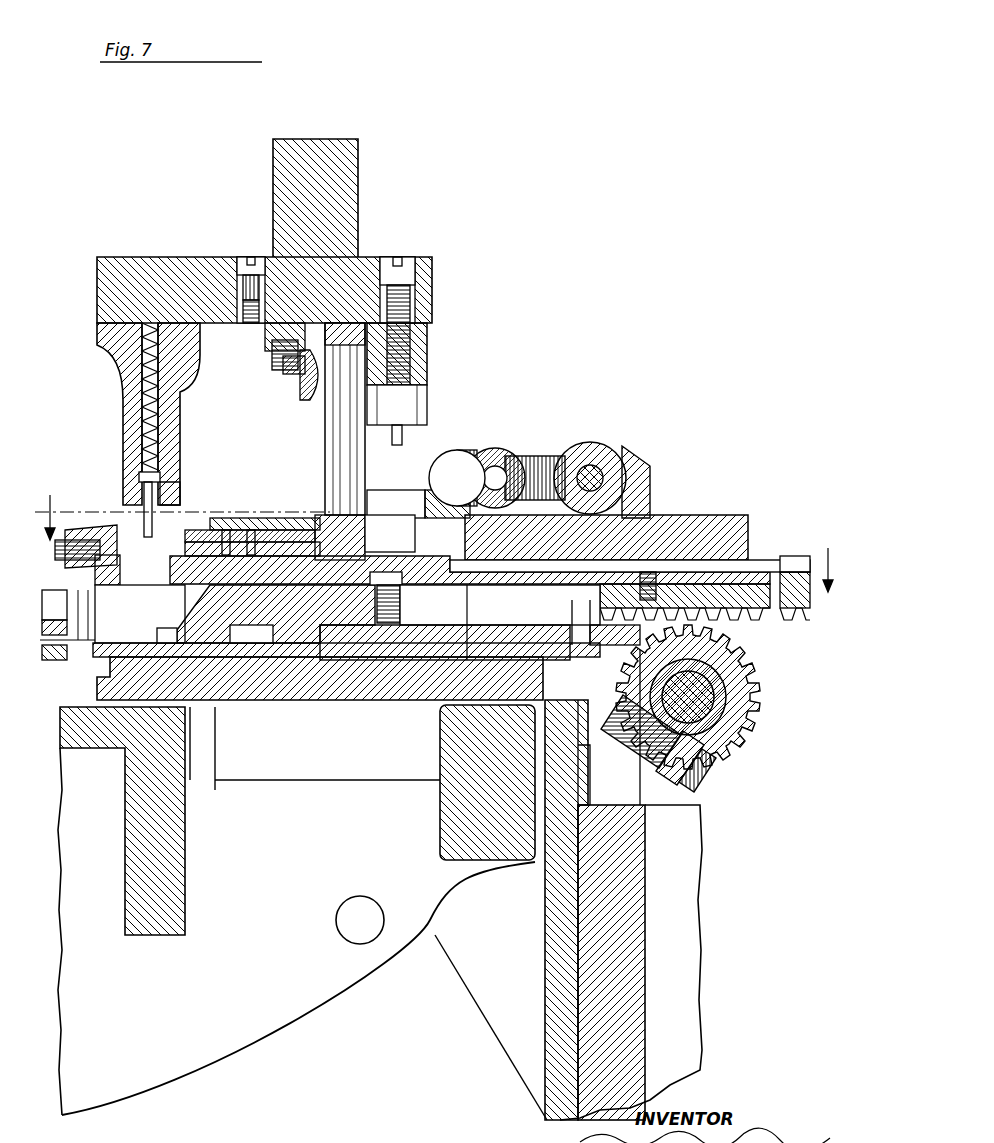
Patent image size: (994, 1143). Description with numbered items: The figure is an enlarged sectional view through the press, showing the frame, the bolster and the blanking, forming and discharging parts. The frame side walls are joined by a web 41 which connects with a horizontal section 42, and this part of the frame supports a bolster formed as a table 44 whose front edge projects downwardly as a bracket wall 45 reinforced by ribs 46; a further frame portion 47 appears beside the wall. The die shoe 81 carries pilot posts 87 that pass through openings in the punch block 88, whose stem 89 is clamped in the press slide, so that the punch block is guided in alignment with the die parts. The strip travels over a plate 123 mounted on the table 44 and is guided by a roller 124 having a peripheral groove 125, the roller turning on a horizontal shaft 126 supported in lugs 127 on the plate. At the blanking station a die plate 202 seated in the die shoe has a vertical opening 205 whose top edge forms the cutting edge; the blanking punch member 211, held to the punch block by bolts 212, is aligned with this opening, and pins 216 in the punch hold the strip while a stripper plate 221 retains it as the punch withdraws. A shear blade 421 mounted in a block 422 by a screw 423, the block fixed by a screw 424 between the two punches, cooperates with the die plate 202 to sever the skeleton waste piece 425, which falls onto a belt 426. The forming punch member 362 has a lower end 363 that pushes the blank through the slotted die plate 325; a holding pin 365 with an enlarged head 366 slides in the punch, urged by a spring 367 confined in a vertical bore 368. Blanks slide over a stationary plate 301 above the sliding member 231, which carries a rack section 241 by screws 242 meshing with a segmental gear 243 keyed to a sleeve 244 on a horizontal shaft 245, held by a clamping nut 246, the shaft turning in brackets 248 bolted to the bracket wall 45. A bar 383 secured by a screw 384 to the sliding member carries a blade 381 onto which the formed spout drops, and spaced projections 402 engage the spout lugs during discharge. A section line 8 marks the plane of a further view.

The punch block 88 is at (100, 282).
The stem 89 is at (343, 222).
The screw 424 is at (248, 262).
The bolts 212 is at (410, 300).
The forming punch member 362 is at (98, 345).
The spring 367 is at (160, 377).
The vertical bore 368 is at (143, 403).
The lower end 363 is at (138, 477).
The enlarged head 366 is at (152, 490).
The holding pin 365 is at (172, 492).
The block 422 is at (277, 352).
The screw 423 is at (295, 376).
The shear blade 421 is at (306, 400).
The pilot posts 87 is at (330, 470).
The blanking punch member 211 is at (425, 385).
The pins 216 is at (402, 438).
The stripper plate 221 is at (440, 500).
The horizontal shaft 126 is at (598, 470).
The peripheral groove 125 is at (535, 460).
The roller 124 is at (500, 456).
The lugs 127 is at (465, 450).
The plate 123 is at (680, 522).
The belt 426 is at (212, 528).
The waste piece 425 is at (262, 520).
The die plate 202 is at (322, 522).
The vertical opening 205 is at (390, 533).
The section line 8 is at (433, 557).
The die plate 325 is at (96, 577).
The bar 383 is at (302, 592).
The sliding member 231 is at (576, 582).
The rack section 241 is at (765, 610).
The screws 242 is at (645, 580).
The projections 402 is at (188, 600).
The screw 384 is at (405, 592).
The stationary plate 301 is at (460, 585).
The die shoe 81 is at (457, 645).
The blade 381 is at (110, 647).
The table 44 is at (345, 690).
The web 41 is at (97, 738).
The ribs 46 is at (497, 1015).
The horizontal section 42 is at (450, 832).
The bracket wall 45 is at (547, 930).
The column 47 is at (640, 975).
The brackets 248 is at (609, 727).
The segmental gear 243 is at (760, 715).
The clamping nut 246 is at (705, 777).
The sleeve 244 is at (712, 733).
The horizontal shaft 245 is at (700, 697).